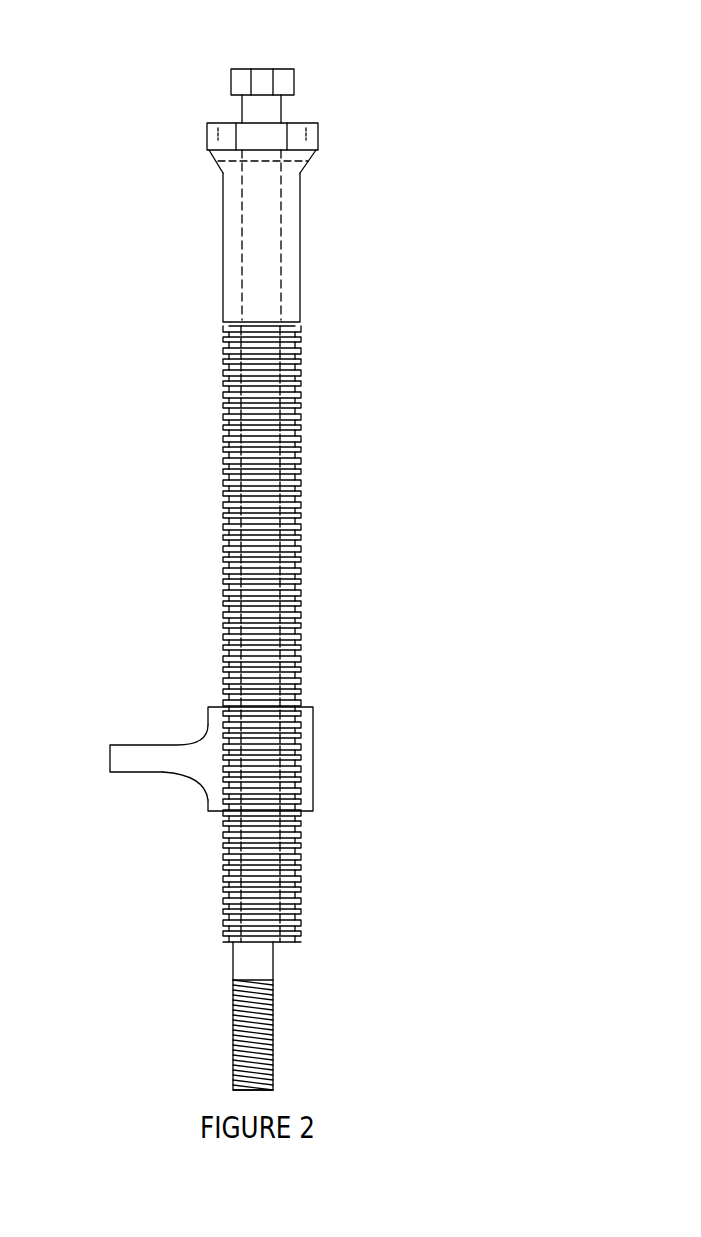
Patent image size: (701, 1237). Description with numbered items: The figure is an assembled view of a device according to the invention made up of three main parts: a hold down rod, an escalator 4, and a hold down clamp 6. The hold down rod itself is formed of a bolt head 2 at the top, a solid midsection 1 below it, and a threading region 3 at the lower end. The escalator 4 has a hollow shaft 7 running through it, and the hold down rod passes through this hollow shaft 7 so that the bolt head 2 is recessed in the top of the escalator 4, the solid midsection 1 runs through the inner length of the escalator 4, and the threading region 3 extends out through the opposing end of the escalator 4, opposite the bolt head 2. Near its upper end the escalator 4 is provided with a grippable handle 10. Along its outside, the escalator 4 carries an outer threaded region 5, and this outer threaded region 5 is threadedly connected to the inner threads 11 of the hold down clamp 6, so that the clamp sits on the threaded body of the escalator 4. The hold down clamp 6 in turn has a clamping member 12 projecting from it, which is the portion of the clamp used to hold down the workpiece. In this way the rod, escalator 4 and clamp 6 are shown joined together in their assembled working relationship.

The solid midsection 1 is at (277, 110).
The bolt head 2 is at (267, 75).
The threading region 3 is at (232, 1018).
The escalator 4 is at (223, 257).
The outer threaded region 5 is at (223, 517).
The hold down clamp 6 is at (303, 763).
The hollow shaft 7 is at (288, 640).
The grippable handle 10 is at (277, 140).
The inner threads 11 is at (217, 750).
The clamping member 12 is at (153, 758).